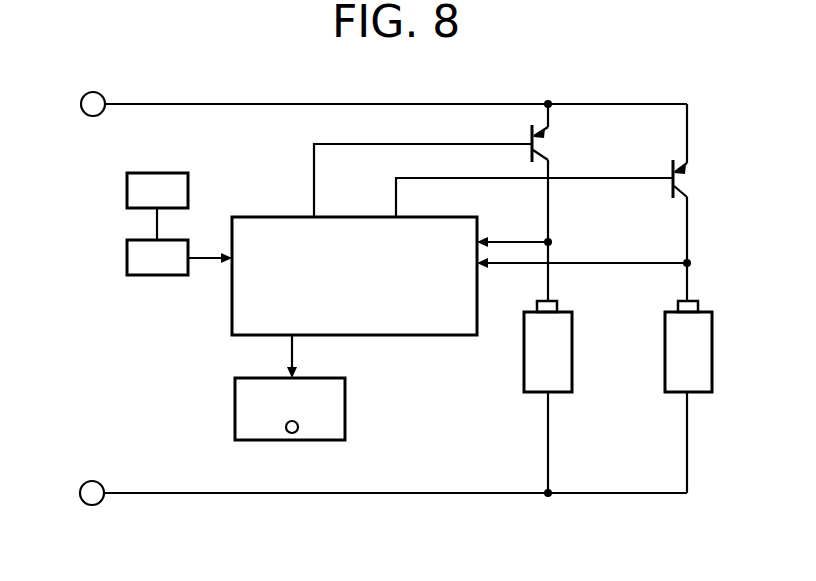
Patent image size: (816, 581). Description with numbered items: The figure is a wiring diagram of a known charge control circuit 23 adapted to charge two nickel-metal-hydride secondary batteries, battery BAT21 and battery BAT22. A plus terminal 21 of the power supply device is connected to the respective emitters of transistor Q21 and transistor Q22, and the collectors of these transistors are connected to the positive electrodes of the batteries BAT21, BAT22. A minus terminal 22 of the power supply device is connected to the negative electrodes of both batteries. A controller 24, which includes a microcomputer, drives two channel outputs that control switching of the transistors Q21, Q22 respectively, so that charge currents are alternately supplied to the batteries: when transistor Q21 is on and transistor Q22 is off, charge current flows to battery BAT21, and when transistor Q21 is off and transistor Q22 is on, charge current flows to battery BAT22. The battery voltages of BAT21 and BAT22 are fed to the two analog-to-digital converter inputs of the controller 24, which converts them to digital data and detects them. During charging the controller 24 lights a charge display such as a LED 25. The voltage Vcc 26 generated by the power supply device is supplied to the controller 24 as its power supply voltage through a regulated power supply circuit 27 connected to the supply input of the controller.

The plus terminal 21 is at (93, 116).
The minus terminal 22 is at (92, 505).
The charge control circuit 23 is at (503, 73).
The controller 24 is at (277, 217).
The LED 25 is at (345, 405).
The voltage Vcc 26 is at (170, 173).
The regulated power supply circuit 27 is at (158, 275).
The transistor Q21 is at (531, 134).
The transistor Q22 is at (671, 168).
The battery BAT21 is at (523, 365).
The battery BAT22 is at (665, 385).